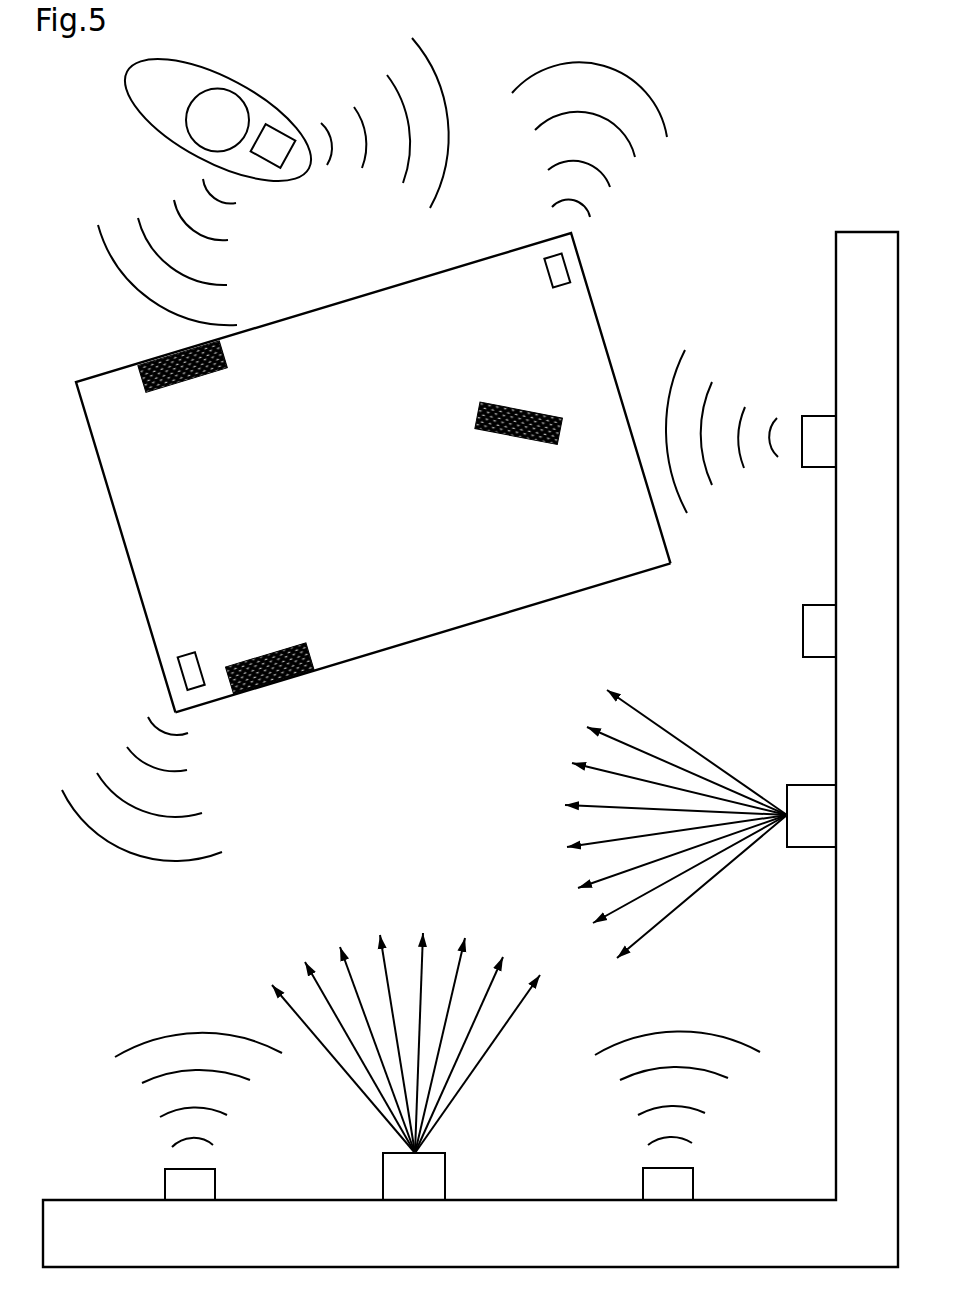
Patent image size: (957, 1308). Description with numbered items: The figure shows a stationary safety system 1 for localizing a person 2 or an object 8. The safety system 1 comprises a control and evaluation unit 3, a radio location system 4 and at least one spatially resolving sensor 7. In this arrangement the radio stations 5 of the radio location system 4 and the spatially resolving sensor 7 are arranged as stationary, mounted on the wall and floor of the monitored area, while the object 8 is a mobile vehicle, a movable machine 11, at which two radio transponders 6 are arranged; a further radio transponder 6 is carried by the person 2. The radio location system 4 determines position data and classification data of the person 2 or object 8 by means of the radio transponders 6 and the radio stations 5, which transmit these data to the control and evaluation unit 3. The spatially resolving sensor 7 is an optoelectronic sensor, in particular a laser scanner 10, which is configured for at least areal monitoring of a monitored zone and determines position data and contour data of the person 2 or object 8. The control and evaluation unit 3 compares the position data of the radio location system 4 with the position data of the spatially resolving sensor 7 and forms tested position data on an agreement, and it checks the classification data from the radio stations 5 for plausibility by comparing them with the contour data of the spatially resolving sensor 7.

The safety system 1 is at (733, 83).
The person 2 is at (139, 85).
The control and evaluation unit 3 is at (818, 640).
The radio location system 4 is at (677, 262).
The radio stations 5 is at (817, 453).
The radio transponder 6 is at (277, 150).
The spatially resolving sensor 7 is at (803, 848).
The object 8 is at (391, 649).
The laser scanner 10 is at (820, 800).
The movable machine 11 is at (485, 604).